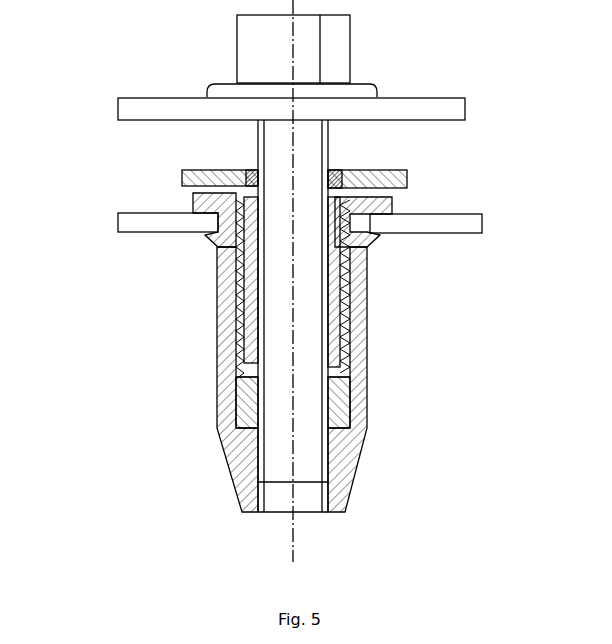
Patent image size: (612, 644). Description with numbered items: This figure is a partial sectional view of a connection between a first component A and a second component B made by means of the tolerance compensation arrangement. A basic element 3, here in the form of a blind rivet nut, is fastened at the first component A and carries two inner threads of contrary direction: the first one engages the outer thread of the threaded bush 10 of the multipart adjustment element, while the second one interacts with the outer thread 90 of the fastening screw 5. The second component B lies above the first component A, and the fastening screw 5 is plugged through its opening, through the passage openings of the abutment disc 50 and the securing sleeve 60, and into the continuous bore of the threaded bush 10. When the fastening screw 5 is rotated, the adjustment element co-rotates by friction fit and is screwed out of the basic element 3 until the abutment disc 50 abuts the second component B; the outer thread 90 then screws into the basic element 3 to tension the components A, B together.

The fastening screw 5 is at (338, 40).
The second component B is at (118, 106).
The first component A is at (118, 221).
The abutment disc 50 is at (181, 181).
The securing sleeve 60 is at (347, 172).
The threaded bush 10 is at (340, 305).
The outer thread 90 is at (328, 418).
The basic element 3 is at (222, 375).